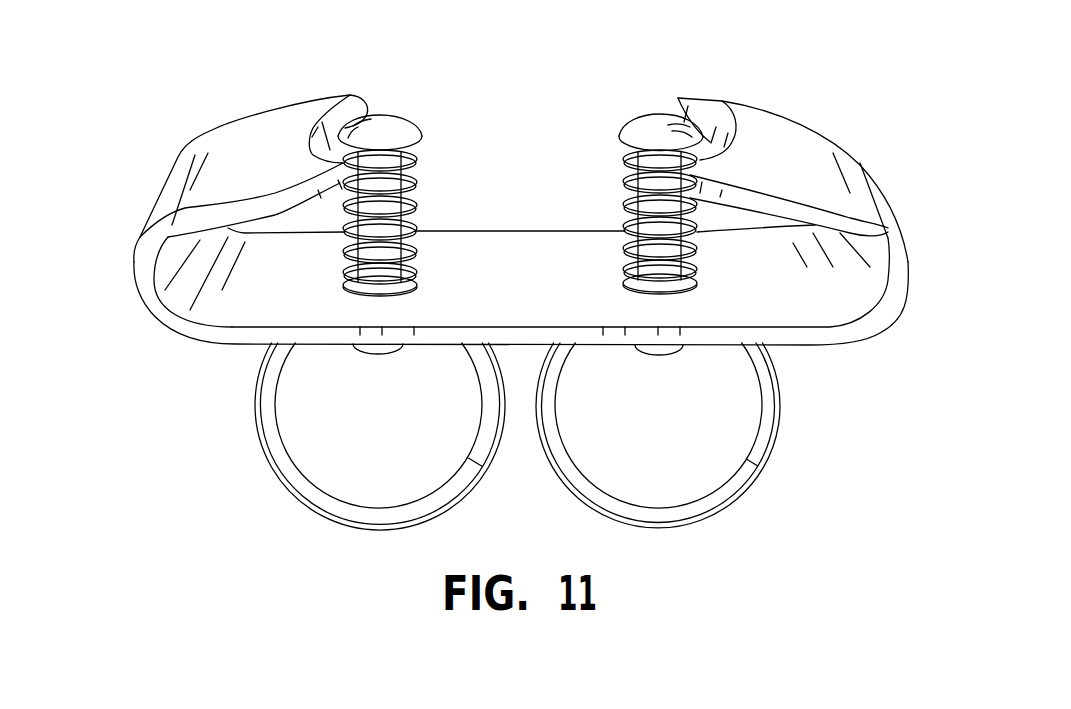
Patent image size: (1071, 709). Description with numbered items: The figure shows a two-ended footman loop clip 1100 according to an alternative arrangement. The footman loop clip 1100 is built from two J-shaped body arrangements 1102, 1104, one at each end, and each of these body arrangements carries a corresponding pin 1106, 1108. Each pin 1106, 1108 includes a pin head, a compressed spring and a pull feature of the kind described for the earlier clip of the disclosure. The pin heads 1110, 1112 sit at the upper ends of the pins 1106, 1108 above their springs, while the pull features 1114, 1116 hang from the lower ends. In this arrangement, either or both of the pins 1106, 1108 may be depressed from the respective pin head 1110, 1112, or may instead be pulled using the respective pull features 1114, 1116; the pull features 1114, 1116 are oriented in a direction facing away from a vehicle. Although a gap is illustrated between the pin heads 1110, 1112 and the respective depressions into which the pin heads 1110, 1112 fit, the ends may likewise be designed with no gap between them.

The two-ended footman loop clip 1100 is at (529, 275).
The J-shaped body arrangement 1102 is at (112, 128).
The J-shaped body arrangement 1104 is at (880, 176).
The pin 1106 is at (407, 158).
The pin 1108 is at (636, 162).
The pin head 1110 is at (400, 130).
The pin head 1112 is at (635, 130).
The pull feature 1114 is at (263, 413).
The pull feature 1116 is at (772, 415).